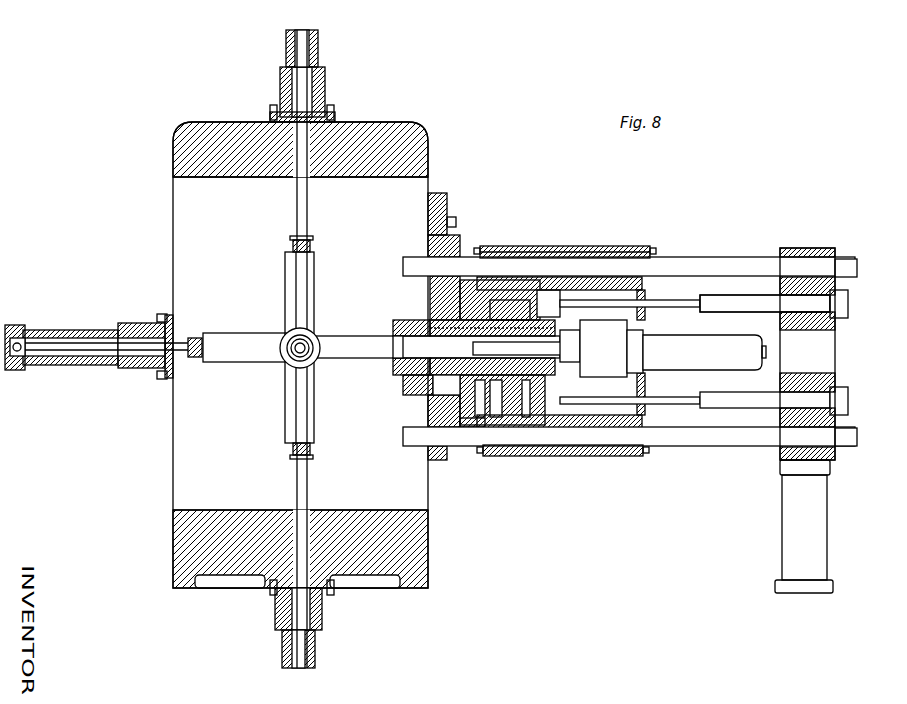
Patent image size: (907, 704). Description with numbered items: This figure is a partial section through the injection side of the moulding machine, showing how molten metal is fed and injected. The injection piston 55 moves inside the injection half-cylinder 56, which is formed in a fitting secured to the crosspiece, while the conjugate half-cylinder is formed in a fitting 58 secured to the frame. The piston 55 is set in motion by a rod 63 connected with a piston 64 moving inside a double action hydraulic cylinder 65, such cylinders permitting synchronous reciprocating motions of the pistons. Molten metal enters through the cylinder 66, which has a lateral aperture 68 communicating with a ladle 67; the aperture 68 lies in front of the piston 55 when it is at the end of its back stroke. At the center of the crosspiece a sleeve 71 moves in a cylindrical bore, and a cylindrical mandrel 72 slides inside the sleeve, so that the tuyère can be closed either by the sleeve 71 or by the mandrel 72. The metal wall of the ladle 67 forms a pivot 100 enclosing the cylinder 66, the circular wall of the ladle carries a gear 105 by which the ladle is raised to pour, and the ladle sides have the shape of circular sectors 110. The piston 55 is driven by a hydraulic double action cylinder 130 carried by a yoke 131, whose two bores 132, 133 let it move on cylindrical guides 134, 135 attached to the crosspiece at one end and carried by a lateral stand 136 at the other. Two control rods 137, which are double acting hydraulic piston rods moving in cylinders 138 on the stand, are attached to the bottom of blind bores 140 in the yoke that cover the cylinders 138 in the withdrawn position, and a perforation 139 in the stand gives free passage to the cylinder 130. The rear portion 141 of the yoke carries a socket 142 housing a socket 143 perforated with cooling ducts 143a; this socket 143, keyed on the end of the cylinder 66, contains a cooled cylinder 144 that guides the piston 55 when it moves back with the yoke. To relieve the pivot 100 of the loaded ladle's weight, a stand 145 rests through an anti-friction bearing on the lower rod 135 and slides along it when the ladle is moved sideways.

The injection piston 55 is at (299, 248).
The conjugate half-cylinder 56 is at (298, 303).
The fitting 58 is at (313, 281).
The rod 63 is at (303, 196).
The piston 64 is at (35, 356).
The double action hydraulic cylinder 65 is at (315, 50).
The cylinder 66 is at (400, 350).
The ladle 67 is at (442, 380).
The aperture 68 is at (418, 372).
The sleeve 71 is at (312, 357).
The mandrel 72 is at (296, 352).
The pivot 100 is at (451, 326).
The gear 105 is at (408, 326).
The circular sector side 110 is at (456, 389).
The hydraulic double action cylinder 130 is at (637, 347).
The yoke 131 is at (610, 254).
The bore 132 is at (570, 257).
The bore 133 is at (598, 458).
The cylindrical guide 134 is at (728, 267).
The cylindrical guide 135 is at (695, 440).
The stand 136 is at (822, 522).
The control rod 137 is at (692, 298).
The cylinder 138 is at (768, 303).
The perforation 139 is at (823, 357).
The blind bore 140 is at (597, 407).
The rear portion 141 is at (497, 410).
The socket 142 is at (512, 372).
The socket 143 is at (522, 372).
The cooling duct 143a is at (508, 340).
The cylinder 144 is at (536, 362).
The stand 145 is at (462, 420).